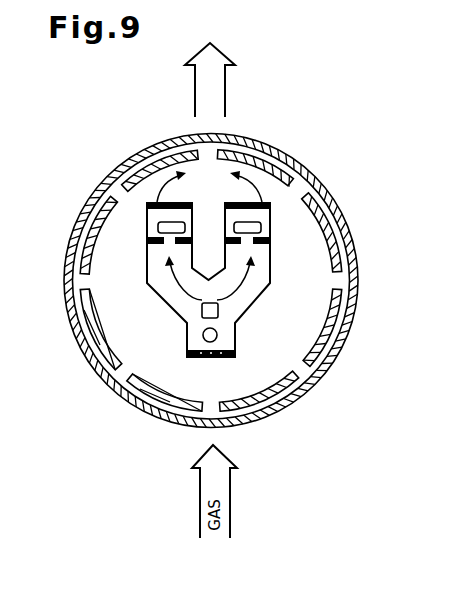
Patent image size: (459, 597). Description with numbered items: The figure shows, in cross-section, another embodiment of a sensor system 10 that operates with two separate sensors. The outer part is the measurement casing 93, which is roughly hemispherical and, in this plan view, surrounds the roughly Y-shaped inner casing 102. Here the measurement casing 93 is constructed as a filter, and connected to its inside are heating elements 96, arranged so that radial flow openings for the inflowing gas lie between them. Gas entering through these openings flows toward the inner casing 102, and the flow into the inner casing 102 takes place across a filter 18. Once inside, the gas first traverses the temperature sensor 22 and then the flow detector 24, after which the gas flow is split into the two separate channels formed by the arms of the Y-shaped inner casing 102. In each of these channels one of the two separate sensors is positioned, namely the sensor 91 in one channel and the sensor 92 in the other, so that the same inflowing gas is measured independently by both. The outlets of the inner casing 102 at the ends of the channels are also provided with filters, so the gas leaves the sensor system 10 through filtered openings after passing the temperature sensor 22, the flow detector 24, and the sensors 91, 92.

The sensor system 10 is at (326, 141).
The filter 18 is at (138, 161).
The temperature sensor 22 is at (203, 335).
The flow detector 24 is at (202, 312).
The sensor 91 is at (163, 226).
The sensor 92 is at (254, 225).
The measurement casing 93 is at (353, 263).
The heating elements 96 is at (97, 194).
The inner casing 102 is at (269, 289).